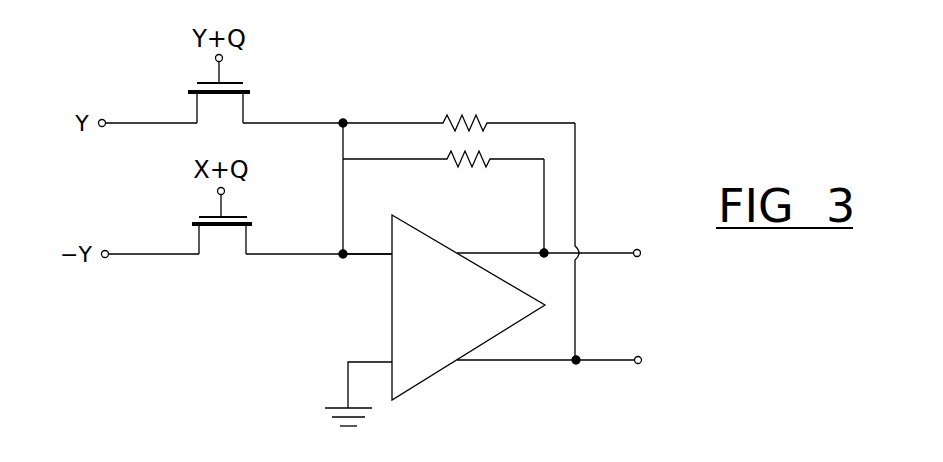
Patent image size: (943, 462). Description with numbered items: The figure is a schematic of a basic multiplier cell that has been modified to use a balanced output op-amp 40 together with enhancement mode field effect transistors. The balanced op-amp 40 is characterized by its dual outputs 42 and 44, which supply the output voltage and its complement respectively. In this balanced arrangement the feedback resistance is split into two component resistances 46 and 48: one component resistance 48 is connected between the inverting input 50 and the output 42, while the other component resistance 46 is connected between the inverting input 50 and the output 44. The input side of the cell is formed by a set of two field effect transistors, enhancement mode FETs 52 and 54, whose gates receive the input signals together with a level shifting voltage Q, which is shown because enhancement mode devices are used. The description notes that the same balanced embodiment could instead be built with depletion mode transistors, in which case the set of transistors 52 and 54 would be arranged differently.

The balanced output op-amp 40 is at (440, 373).
The output 42 is at (645, 243).
The output 44 is at (638, 367).
The component resistance 46 is at (478, 113).
The component resistance 48 is at (455, 163).
The inverting input 50 is at (373, 250).
The enhancement mode field effect transistor 52 is at (232, 98).
The enhancement mode field effect transistor 54 is at (232, 228).